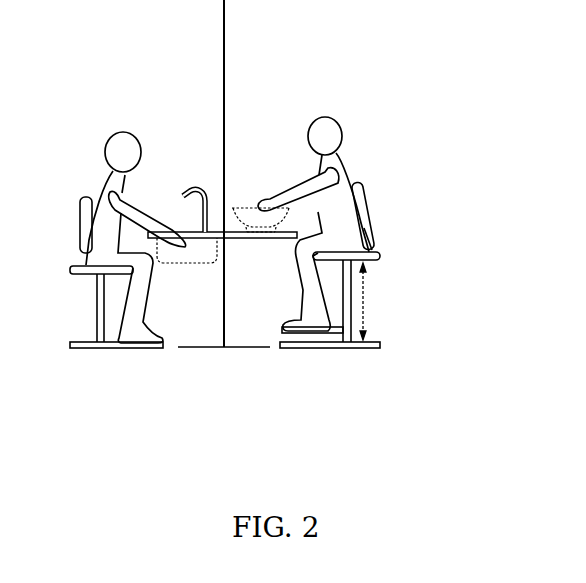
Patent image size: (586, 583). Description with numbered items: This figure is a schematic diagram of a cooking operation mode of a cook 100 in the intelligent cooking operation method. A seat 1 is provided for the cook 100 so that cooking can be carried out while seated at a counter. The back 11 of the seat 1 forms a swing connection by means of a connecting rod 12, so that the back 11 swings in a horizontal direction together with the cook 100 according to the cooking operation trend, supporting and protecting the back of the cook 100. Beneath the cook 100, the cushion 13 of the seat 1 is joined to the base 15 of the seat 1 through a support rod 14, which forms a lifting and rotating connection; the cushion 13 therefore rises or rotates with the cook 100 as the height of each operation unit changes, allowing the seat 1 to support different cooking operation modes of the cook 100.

The cook 100 is at (388, 252).
The seat 1 is at (399, 269).
The back 11 is at (367, 198).
The connecting rod 12 is at (368, 227).
The cushion 13 is at (353, 255).
The support rod 14 is at (347, 298).
The base 15 is at (353, 345).